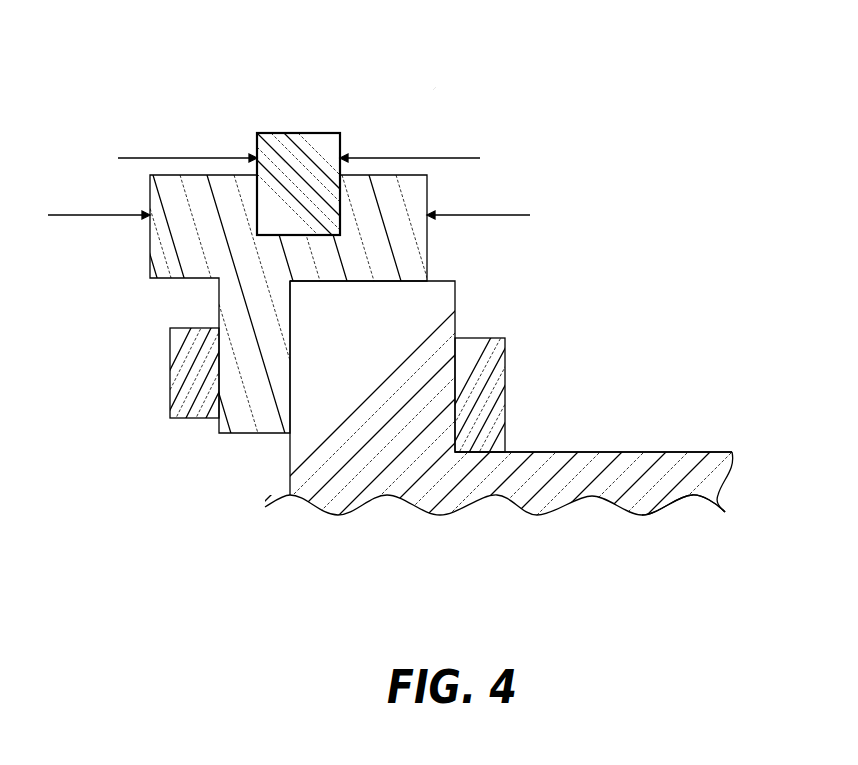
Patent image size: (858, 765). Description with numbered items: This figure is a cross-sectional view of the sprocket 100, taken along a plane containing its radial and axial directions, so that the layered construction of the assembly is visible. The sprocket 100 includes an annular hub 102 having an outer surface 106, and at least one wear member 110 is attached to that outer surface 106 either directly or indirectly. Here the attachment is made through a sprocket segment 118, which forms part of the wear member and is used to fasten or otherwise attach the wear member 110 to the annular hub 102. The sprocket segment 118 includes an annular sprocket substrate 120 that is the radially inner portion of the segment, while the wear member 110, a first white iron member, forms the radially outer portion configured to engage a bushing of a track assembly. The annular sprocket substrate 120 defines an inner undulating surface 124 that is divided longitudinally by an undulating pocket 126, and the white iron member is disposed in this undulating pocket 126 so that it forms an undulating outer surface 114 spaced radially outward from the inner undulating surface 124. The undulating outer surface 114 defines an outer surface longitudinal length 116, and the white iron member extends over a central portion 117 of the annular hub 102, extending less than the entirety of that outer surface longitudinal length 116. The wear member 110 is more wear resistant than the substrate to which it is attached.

The sprocket 100 is at (432, 91).
The annular hub 102 is at (710, 485).
The outer surface 106 is at (427, 281).
The wear member 110 is at (283, 163).
The undulating outer surface 114 is at (300, 133).
The outer surface longitudinal length 116 is at (148, 158).
The central portion 117 is at (380, 488).
The sprocket segment 118 is at (173, 237).
The annular sprocket substrate 120 is at (227, 249).
The inner undulating surface 124 is at (427, 173).
The undulating pocket 126 is at (300, 237).